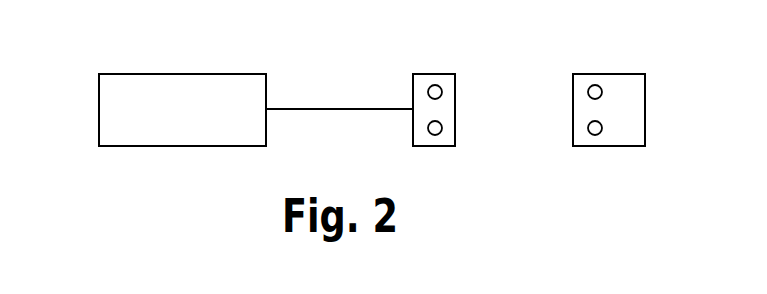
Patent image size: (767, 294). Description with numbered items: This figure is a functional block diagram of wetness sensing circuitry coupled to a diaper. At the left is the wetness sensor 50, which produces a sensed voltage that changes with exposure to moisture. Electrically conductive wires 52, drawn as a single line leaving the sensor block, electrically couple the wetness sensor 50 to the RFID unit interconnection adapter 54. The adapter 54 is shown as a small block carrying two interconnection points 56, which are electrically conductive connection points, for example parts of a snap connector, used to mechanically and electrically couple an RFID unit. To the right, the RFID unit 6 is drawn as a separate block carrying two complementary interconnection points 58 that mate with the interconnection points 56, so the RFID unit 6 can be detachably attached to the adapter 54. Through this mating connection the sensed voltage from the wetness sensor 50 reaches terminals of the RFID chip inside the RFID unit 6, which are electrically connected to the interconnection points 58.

The wetness sensor 50 is at (222, 74).
The electrically conductive wires 52 is at (310, 108).
The RFID unit interconnection adapter 54 is at (433, 74).
The interconnection points 56 is at (443, 91).
The RFID unit 6 is at (610, 74).
The complementary interconnection points 58 is at (603, 91).